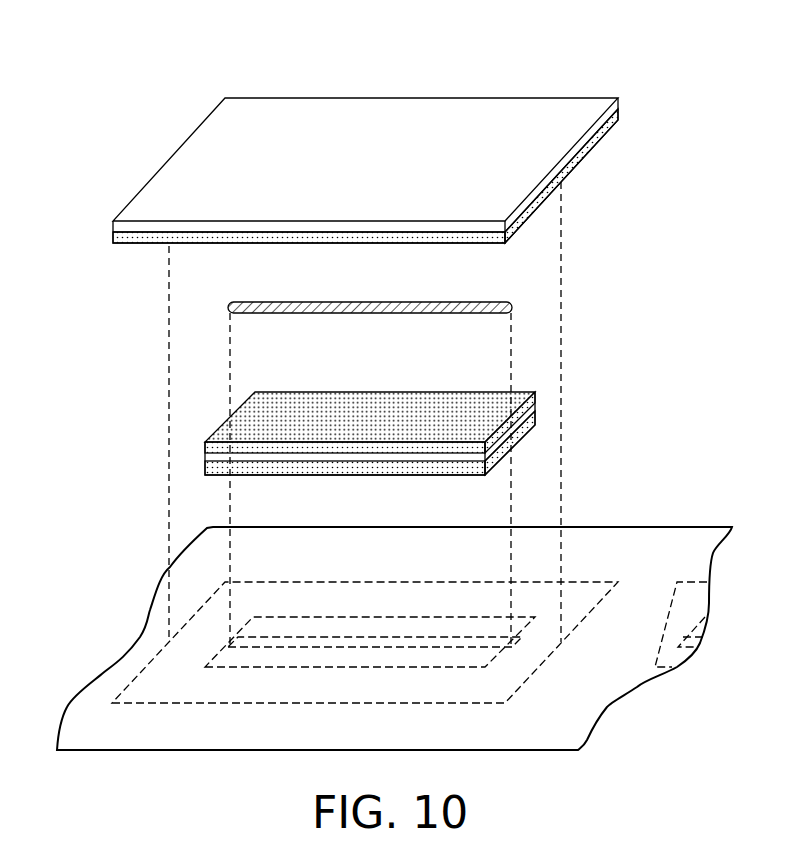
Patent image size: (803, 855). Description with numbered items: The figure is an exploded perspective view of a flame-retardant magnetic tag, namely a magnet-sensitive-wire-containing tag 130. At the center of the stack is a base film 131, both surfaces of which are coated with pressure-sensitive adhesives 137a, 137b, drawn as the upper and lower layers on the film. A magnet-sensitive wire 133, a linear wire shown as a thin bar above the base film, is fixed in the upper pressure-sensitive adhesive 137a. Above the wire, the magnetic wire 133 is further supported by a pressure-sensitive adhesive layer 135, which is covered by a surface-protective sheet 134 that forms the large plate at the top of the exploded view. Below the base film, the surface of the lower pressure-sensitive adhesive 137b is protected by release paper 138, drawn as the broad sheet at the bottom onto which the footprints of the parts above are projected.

The magnet-sensitive-wire-containing tag 130 is at (418, 66).
The base film 131 is at (535, 410).
The magnet-sensitive wire 133 is at (505, 302).
The surface-protective sheet 134 is at (573, 98).
The pressure-sensitive adhesive layer 135 is at (117, 246).
The pressure-sensitive adhesive 137a is at (203, 449).
The pressure-sensitive adhesive 137b is at (203, 467).
The release paper 138 is at (590, 727).